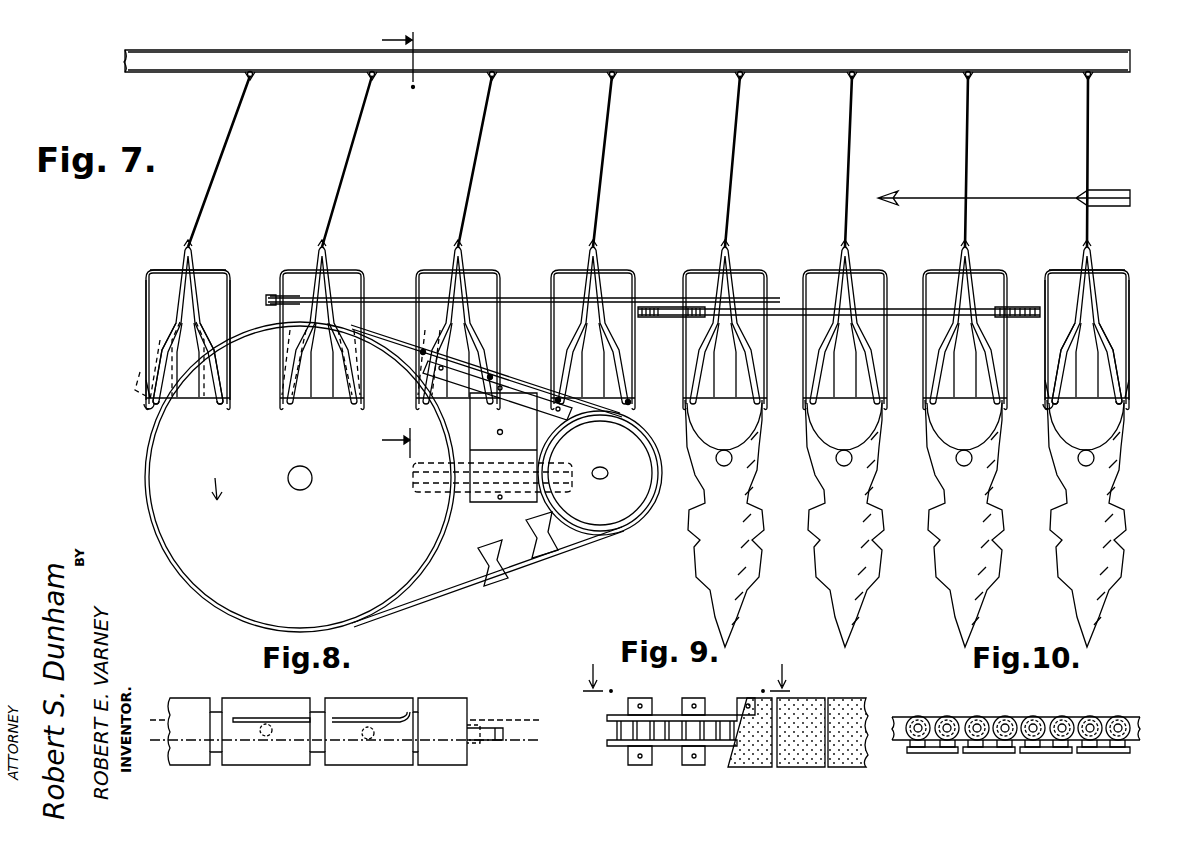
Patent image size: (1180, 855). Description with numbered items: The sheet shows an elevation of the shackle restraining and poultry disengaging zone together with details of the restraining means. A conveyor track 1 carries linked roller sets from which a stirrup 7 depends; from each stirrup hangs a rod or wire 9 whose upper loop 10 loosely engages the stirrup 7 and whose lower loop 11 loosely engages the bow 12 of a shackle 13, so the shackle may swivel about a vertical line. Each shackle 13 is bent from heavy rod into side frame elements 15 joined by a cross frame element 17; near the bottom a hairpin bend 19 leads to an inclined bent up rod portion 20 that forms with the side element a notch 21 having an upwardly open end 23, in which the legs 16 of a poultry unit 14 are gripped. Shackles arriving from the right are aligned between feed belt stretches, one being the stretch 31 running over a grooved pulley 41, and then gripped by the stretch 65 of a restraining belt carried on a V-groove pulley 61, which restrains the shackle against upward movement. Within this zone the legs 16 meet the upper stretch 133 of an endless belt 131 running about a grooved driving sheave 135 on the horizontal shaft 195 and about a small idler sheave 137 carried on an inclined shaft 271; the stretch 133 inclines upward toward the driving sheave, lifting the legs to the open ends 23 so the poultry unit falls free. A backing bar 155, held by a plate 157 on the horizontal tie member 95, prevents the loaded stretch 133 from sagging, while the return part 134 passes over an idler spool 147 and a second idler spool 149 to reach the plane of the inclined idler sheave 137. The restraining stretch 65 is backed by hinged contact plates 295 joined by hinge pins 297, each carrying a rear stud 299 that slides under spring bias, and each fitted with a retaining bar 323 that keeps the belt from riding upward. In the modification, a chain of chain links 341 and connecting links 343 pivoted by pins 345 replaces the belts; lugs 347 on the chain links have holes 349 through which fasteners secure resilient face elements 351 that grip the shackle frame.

In FIG. 7, the track 1 is at (535, 72).
In FIG. 7, the stirrup 7 is at (256, 79).
In FIG. 7, the rod or wire 9 is at (224, 150).
In FIG. 7, the loop 10 is at (246, 78).
In FIG. 9, the loop 10 is at (687, 668).
In FIG. 7, the loop 11 is at (976, 242).
In FIG. 7, the bow 12 is at (194, 256).
In FIG. 7, the shackle 13 is at (246, 269).
In FIG. 7, the poultry unit 14 is at (748, 472).
In FIG. 7, the side frame element 15 is at (146, 324).
In FIG. 7, the legs 16 is at (424, 352).
In FIG. 7, the cross frame element 17 is at (160, 270).
In FIG. 7, the hairpin bend 19 is at (146, 406).
In FIG. 7, the bent up rod portion 20 is at (170, 398).
In FIG. 7, the notch 21 is at (148, 386).
In FIG. 7, the upwardly open end 23 is at (159, 348).
In FIG. 7, the stretch 31 is at (906, 308).
In FIG. 7, the grooved pulley 41 is at (666, 318).
In FIG. 7, the V-groove pulley 61 is at (270, 296).
In FIG. 7, the stretch 65 is at (665, 296).
In FIG. 7, the horizontal tie member 95 is at (461, 494).
In FIG. 7, the endless belt 131 is at (449, 597).
In FIG. 7, the upper stretch 133 is at (519, 392).
In FIG. 7, the return part 134 is at (578, 530).
In FIG. 7, the driving sheave 135 is at (190, 555).
In FIG. 7, the idler sheave 137 is at (627, 500).
In FIG. 7, the idler spool 147 is at (500, 578).
In FIG. 7, the idler spool 149 is at (546, 558).
In FIG. 7, the backing bar 155 is at (488, 396).
In FIG. 7, the plate 157 is at (520, 452).
In FIG. 7, the horizontal shaft 195 is at (302, 491).
In FIG. 7, the shaft 271 is at (612, 468).
In FIG. 8, the contact plate 295 is at (190, 702).
In FIG. 8, the hinge pin 297 is at (215, 768).
In FIG. 8, the stud 299 is at (270, 724).
In FIG. 8, the retaining bar 323 is at (345, 712).
In FIG. 9, the chain link 341 is at (620, 714).
In FIG. 10, the chain link 341 is at (932, 716).
In FIG. 9, the connecting link 343 is at (724, 750).
In FIG. 10, the connecting link 343 is at (970, 716).
In FIG. 10, the pin 345 is at (1035, 724).
In FIG. 9, the lug 347 is at (692, 698).
In FIG. 10, the lug 347 is at (935, 754).
In FIG. 9, the hole 349 is at (752, 704).
In FIG. 9, the face element 351 is at (820, 700).
In FIG. 10, the face element 351 is at (1012, 754).